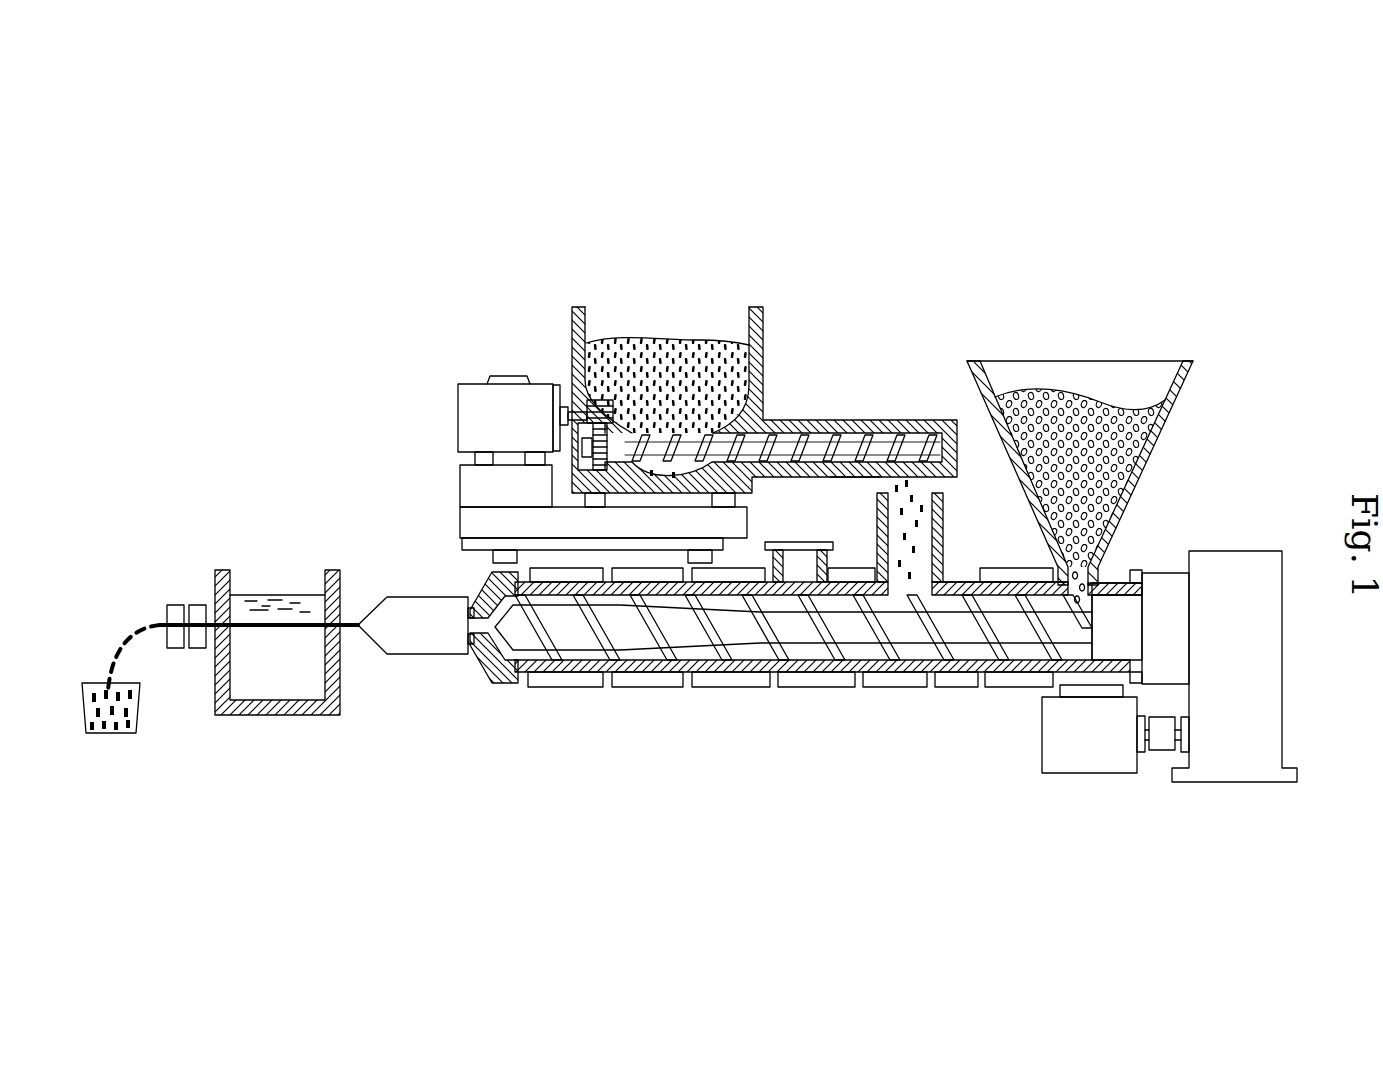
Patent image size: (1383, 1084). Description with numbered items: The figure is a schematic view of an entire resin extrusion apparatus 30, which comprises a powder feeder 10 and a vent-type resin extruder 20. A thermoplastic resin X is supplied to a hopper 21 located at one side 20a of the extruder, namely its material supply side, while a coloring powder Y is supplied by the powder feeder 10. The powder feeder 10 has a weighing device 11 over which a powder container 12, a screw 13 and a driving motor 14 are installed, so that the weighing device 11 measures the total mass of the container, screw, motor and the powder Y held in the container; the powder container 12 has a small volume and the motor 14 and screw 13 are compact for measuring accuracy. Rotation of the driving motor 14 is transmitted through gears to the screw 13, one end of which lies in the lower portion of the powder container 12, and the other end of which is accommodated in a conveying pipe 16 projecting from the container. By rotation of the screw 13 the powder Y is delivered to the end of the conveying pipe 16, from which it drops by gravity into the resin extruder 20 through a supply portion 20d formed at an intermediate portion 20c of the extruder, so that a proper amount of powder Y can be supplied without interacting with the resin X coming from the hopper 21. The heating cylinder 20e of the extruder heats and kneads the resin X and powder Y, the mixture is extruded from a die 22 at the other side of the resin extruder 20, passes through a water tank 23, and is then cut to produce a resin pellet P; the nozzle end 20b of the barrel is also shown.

The resin extrusion apparatus 30 is at (424, 317).
The powder feeder 10 is at (777, 357).
The powder container 12 is at (590, 352).
The screw 13 is at (847, 438).
The driving motor 14 is at (471, 410).
The weighing device 11 is at (486, 525).
The conveying pipe 16 is at (851, 480).
The coloring powder Y is at (681, 347).
The thermoplastic resin X is at (1100, 410).
The hopper 21 is at (1172, 413).
The resin extruder 20 is at (744, 695).
The one side 20a is at (1113, 580).
The nozzle end of barrel 20b is at (503, 685).
The intermediate portion 20c is at (950, 571).
The supply portion 20d is at (943, 523).
The heating cylinder 20e is at (655, 683).
The die 22 is at (425, 648).
The water tank 23 is at (260, 717).
The resin pellet P is at (150, 613).